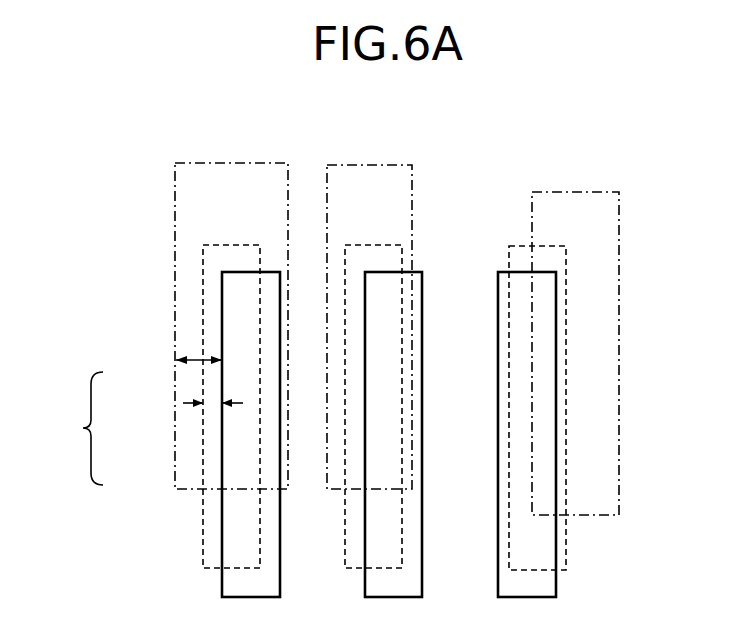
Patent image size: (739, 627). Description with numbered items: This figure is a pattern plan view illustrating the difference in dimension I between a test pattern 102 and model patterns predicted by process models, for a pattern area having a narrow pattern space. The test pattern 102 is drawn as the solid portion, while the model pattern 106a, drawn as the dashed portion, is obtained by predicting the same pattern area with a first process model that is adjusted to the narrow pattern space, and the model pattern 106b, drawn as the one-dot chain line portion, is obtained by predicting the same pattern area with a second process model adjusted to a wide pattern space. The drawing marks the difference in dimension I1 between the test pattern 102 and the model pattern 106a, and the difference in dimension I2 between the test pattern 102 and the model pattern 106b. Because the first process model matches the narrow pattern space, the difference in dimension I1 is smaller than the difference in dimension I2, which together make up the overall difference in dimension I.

The test pattern 102 is at (230, 283).
The model pattern 106a is at (248, 252).
The model pattern 106b is at (192, 176).
The difference in dimension I is at (80, 428).
The difference in dimension I1 is at (217, 407).
The difference in dimension I2 is at (197, 361).